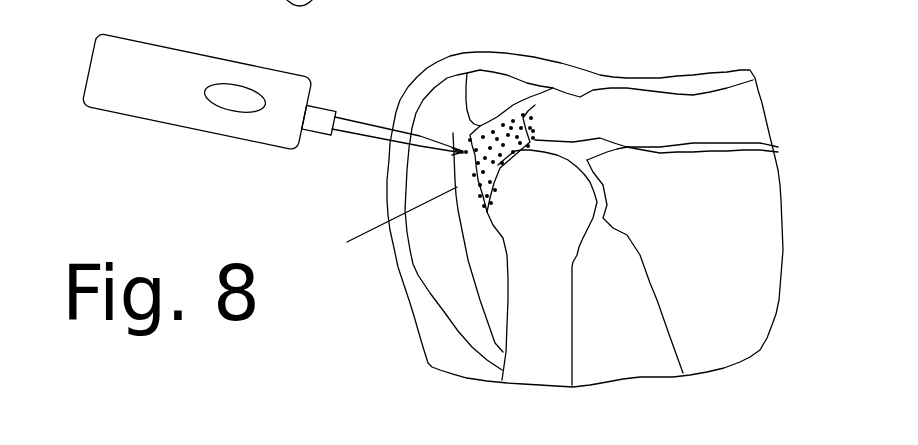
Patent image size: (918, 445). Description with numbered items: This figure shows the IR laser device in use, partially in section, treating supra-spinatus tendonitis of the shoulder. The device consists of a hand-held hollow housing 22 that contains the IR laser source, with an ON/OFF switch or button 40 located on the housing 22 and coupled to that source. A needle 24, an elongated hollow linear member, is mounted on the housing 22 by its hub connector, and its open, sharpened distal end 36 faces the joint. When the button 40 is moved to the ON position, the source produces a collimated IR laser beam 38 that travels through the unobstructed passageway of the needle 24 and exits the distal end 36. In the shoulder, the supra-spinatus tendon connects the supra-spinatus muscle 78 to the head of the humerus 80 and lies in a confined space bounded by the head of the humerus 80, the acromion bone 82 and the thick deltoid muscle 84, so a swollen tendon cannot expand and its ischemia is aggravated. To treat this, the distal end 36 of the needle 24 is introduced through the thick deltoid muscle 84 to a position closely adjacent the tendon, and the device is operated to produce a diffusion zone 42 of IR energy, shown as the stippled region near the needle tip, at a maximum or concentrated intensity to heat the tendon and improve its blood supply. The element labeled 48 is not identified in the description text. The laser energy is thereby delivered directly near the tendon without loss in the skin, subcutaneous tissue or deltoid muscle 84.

The housing 22 is at (193, 83).
The ON/OFF switch or button 40 is at (250, 100).
The needle 24 is at (392, 130).
The IR laser beam 38 is at (462, 148).
The distal end of the needle 36 is at (462, 151).
The diffusion zone 42 is at (466, 168).
The acromion bone 82 is at (507, 93).
The skin 48 is at (600, 73).
The supra-spinatus muscle 78 is at (675, 118).
The deltoid muscle 84 is at (437, 265).
The head of the humerus 80 is at (527, 188).